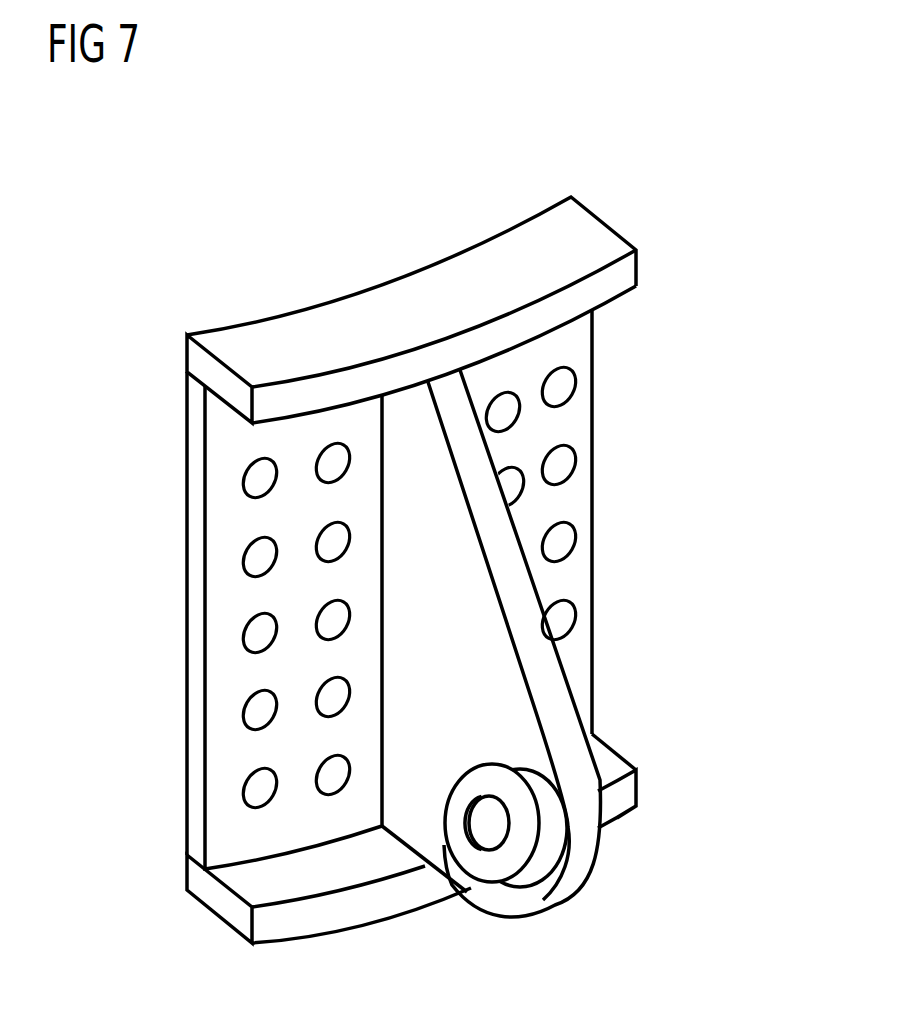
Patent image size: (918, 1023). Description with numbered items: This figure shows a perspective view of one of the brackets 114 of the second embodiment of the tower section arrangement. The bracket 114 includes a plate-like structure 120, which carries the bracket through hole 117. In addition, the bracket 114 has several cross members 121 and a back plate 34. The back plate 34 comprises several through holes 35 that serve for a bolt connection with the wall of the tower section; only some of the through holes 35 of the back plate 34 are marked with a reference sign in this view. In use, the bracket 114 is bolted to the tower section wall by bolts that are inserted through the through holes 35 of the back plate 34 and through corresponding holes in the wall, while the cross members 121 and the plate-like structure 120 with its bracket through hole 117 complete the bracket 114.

The bracket 114 is at (690, 143).
The cross members 121 is at (636, 262).
The back plate 34 is at (592, 415).
The through holes 35 is at (242, 483).
The plate-like structure 120 is at (545, 665).
The bracket through hole 117 is at (492, 830).